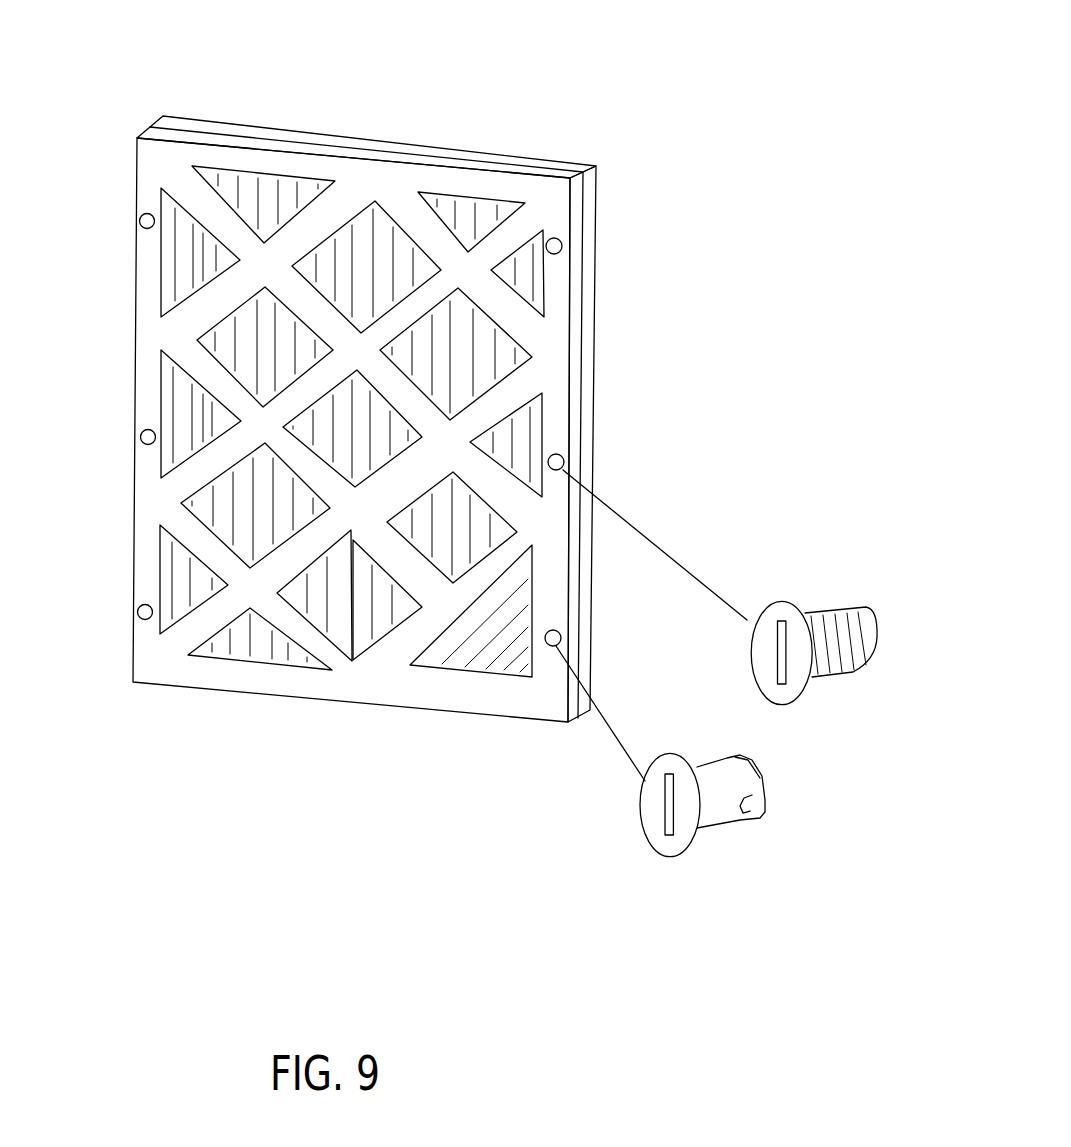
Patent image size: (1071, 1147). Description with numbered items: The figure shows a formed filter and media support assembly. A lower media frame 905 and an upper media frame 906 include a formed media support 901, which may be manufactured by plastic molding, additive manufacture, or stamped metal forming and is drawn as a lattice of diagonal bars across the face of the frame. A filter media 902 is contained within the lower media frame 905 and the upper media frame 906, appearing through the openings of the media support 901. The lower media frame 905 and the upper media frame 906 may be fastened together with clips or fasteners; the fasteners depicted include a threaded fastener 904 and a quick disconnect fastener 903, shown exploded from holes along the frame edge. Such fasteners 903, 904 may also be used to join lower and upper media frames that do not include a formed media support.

The media support 901 is at (455, 272).
The filter media 902 is at (247, 502).
The quick disconnect fastener 903 is at (647, 838).
The threaded fastener 904 is at (863, 622).
The lower media frame 905 is at (568, 270).
The upper media frame 906 is at (492, 150).